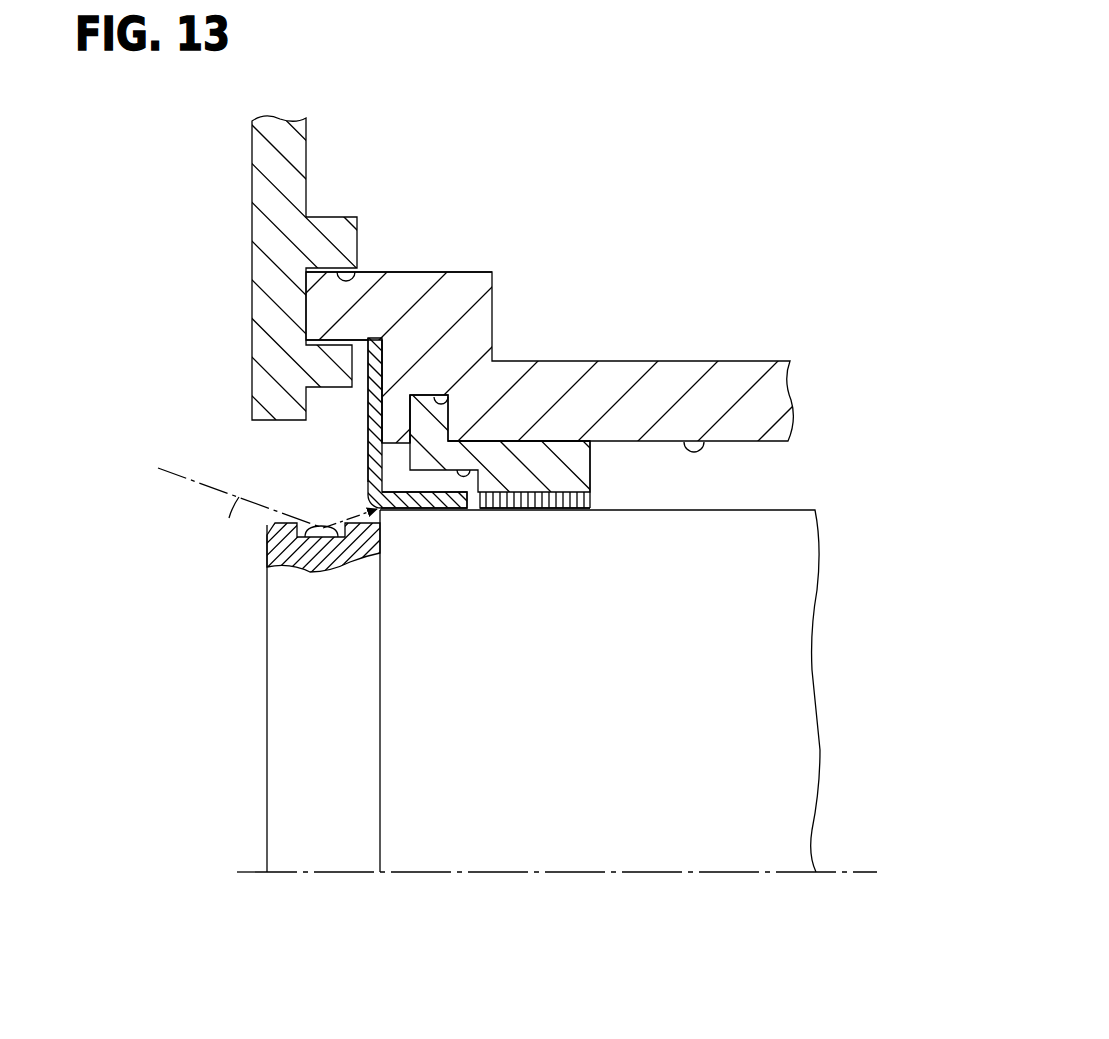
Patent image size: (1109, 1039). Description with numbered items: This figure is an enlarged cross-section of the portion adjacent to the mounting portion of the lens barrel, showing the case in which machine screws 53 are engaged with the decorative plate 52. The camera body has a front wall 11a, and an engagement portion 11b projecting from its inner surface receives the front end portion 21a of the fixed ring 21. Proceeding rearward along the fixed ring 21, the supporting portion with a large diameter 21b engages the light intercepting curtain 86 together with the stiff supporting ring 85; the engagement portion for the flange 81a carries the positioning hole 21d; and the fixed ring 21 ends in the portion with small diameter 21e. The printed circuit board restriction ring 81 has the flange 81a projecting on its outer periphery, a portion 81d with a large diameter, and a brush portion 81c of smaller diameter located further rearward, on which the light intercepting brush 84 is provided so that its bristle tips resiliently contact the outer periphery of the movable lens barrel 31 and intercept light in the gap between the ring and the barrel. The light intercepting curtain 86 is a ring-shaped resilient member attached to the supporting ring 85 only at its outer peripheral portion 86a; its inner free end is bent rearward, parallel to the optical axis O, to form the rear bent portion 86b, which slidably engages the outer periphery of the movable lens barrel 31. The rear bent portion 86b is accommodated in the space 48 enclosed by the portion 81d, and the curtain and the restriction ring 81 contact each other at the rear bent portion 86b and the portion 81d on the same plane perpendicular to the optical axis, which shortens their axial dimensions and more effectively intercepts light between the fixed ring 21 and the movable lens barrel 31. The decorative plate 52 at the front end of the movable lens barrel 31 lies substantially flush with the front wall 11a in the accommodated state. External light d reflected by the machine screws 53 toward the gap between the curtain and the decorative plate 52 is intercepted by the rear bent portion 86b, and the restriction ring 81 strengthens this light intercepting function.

The front wall 11a is at (252, 164).
The engagement portion 11b is at (346, 283).
The fixed ring 21 is at (697, 356).
The front end portion 21a is at (320, 305).
The supporting portion with a large diameter 21b is at (333, 348).
The positioning hole 21d is at (477, 441).
The portion with small diameter 21e is at (703, 437).
The supporting ring 85 is at (403, 345).
The printed circuit board restriction ring 81 is at (498, 441).
The flange 81a is at (435, 392).
The brush portion 81c is at (597, 500).
The portion with a large diameter 81d is at (520, 441).
The light intercepting brush 84 is at (560, 510).
The space 48 is at (443, 485).
The light intercepting curtain 86 is at (364, 454).
The outer peripheral portion 86a is at (368, 420).
The rear bent portion 86b is at (412, 508).
The movable lens barrel 31 is at (475, 858).
The decorative plate 52 is at (352, 860).
The machine screws 53 is at (323, 545).
The rotational axis O is at (672, 873).
The external light d is at (236, 503).